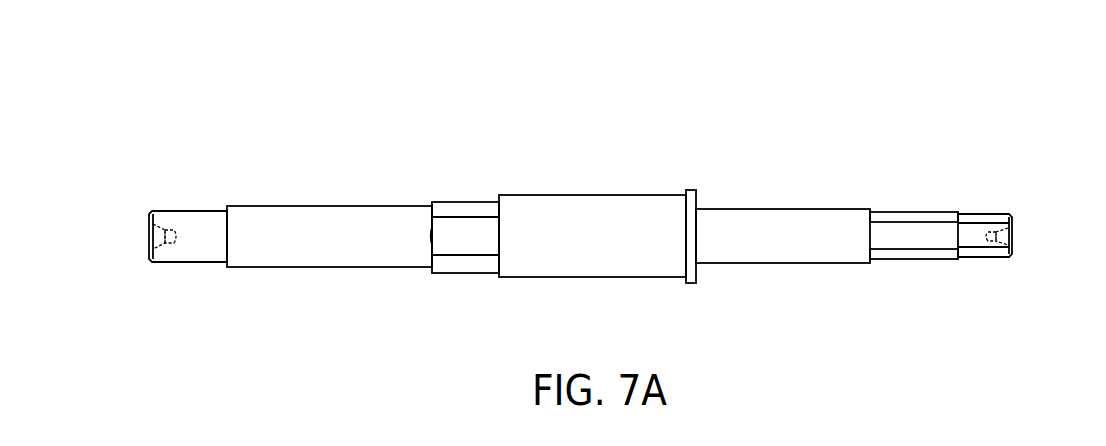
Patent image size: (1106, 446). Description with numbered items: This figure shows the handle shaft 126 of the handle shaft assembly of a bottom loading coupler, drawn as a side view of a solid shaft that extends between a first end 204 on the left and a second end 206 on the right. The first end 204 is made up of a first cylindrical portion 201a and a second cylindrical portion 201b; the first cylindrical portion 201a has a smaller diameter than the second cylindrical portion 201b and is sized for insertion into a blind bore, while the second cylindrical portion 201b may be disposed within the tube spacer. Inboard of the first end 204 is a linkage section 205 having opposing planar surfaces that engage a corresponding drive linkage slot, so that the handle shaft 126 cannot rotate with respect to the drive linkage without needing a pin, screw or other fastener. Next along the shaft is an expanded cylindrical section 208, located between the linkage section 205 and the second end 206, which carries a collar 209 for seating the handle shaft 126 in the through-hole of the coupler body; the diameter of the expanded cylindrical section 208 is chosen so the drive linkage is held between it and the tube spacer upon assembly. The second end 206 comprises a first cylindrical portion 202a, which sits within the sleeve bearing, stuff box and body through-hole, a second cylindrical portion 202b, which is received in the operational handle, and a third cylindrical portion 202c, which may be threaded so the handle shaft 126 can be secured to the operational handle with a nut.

The handle shaft 126 is at (240, 87).
The first end 204 is at (177, 199).
The second end 206 is at (999, 200).
The first cylindrical portion 201a is at (190, 264).
The second cylindrical portion 201b is at (366, 268).
The linkage section 205 is at (470, 201).
The expanded cylindrical section 208 is at (596, 187).
The collar 209 is at (692, 284).
The first cylindrical portion 202a is at (781, 208).
The second cylindrical portion 202b is at (908, 260).
The third cylindrical portion 202c is at (988, 258).